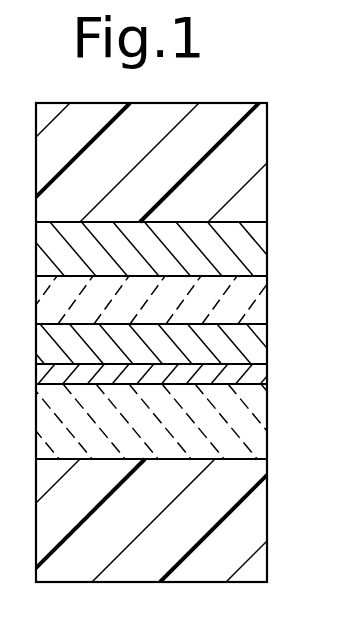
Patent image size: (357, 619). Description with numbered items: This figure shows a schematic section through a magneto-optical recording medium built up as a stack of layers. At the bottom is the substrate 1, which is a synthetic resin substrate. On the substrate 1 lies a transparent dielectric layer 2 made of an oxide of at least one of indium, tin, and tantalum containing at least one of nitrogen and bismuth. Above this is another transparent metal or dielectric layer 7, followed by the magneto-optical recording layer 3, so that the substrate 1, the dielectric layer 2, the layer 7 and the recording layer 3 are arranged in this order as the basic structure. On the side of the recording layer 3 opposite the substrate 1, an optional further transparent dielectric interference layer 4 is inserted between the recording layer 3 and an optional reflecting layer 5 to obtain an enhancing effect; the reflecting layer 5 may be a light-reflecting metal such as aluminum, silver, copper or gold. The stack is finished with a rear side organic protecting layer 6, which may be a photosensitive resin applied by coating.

The substrate 1 is at (260, 496).
The transparent dielectric layer 2 is at (260, 426).
The magneto-optical recording layer 3 is at (260, 354).
The transparent dielectric layer 4 is at (260, 302).
The reflecting layer 5 is at (260, 256).
The organic protecting layer 6 is at (258, 140).
The transparent metal or dielectric layer 7 is at (260, 390).